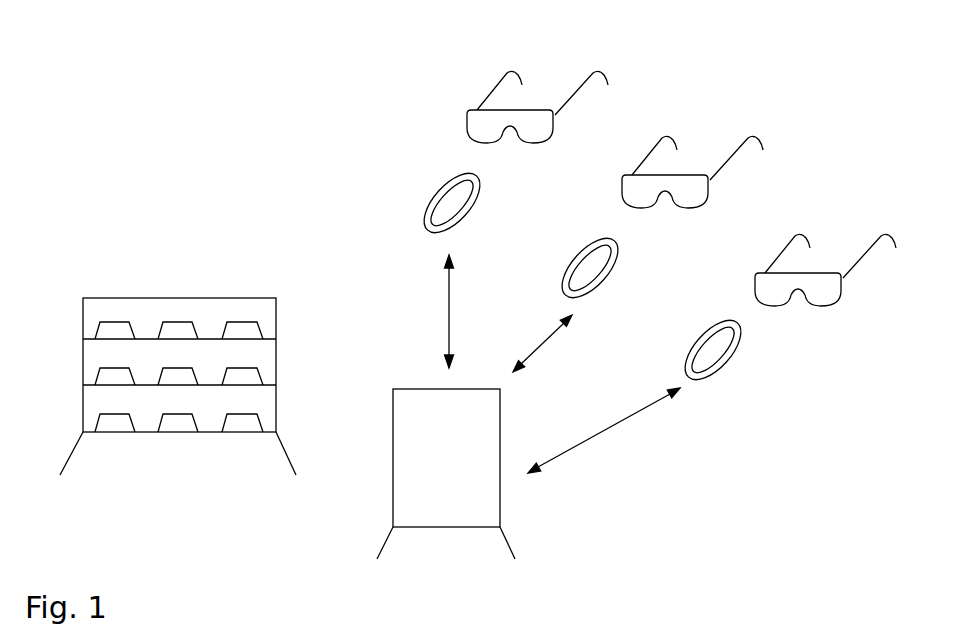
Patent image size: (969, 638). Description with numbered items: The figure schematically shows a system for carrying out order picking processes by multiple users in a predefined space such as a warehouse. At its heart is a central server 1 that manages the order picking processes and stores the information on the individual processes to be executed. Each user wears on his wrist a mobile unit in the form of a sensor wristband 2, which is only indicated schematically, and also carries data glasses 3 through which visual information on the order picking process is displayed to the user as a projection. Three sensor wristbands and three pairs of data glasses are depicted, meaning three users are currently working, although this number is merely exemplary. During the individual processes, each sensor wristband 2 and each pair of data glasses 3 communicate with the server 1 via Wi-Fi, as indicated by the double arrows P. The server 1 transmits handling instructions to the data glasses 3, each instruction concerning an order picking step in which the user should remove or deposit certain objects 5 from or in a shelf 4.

The central server 1 is at (404, 389).
The sensor wristband 2 is at (432, 196).
The data glasses 3 is at (505, 72).
The shelf 4 is at (178, 367).
The objects 5 is at (97, 325).
The double arrows P is at (449, 310).